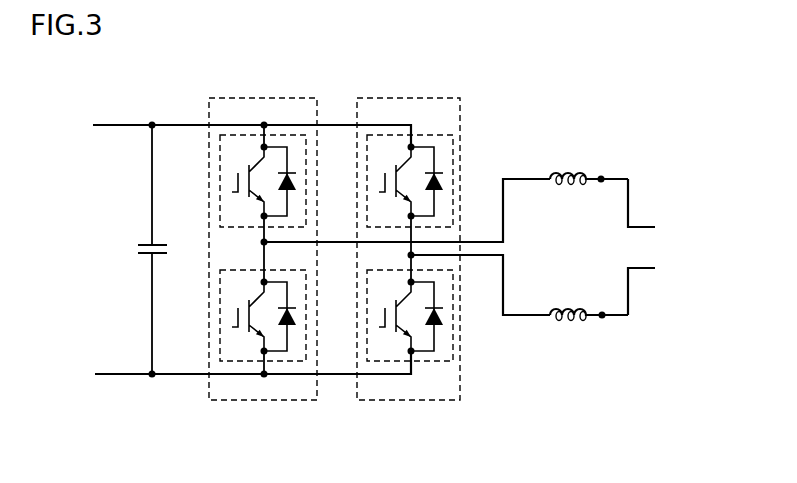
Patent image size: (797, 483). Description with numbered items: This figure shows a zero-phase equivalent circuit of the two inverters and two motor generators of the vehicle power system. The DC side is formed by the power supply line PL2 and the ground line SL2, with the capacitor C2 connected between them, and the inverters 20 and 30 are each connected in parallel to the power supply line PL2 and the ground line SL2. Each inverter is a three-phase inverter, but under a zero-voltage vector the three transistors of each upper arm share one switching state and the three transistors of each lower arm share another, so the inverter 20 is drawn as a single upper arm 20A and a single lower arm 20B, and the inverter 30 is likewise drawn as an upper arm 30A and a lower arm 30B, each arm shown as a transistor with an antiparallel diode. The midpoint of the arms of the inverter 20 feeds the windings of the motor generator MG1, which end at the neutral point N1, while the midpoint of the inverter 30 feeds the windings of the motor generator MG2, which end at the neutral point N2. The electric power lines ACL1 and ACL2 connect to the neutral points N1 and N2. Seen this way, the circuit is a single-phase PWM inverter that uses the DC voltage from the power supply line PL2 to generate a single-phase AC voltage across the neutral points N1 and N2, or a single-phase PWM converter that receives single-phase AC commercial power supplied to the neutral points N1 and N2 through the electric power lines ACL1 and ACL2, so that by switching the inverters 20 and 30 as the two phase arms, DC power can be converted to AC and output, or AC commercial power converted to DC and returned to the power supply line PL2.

The power supply line PL2 is at (118, 123).
The ground line SL2 is at (122, 376).
The capacitor C2 is at (158, 245).
The inverter 20 is at (233, 97).
The upper arm 20A is at (287, 135).
The lower arm 20B is at (245, 362).
The inverter 30 is at (382, 97).
The upper arm 30A is at (433, 135).
The lower arm 30B is at (428, 362).
The motor generator MG1 is at (588, 147).
The motor generator MG2 is at (589, 340).
The neutral point N1 is at (603, 178).
The neutral point N2 is at (603, 316).
The electric power line ACL1 is at (628, 197).
The electric power line ACL2 is at (628, 297).